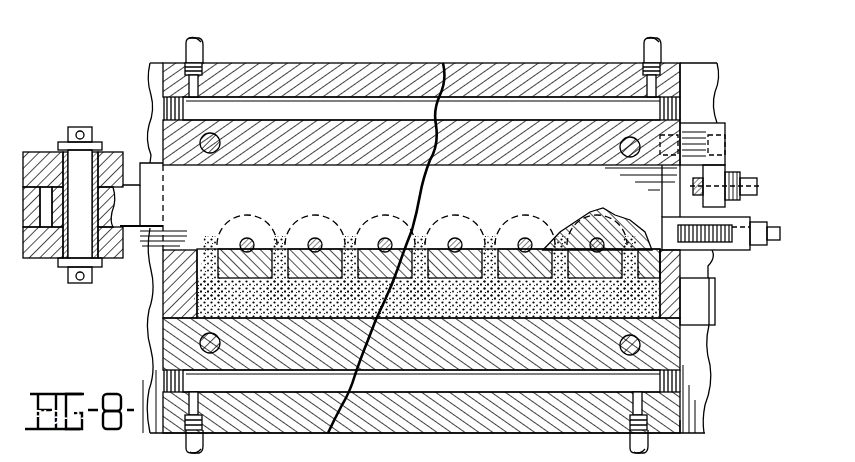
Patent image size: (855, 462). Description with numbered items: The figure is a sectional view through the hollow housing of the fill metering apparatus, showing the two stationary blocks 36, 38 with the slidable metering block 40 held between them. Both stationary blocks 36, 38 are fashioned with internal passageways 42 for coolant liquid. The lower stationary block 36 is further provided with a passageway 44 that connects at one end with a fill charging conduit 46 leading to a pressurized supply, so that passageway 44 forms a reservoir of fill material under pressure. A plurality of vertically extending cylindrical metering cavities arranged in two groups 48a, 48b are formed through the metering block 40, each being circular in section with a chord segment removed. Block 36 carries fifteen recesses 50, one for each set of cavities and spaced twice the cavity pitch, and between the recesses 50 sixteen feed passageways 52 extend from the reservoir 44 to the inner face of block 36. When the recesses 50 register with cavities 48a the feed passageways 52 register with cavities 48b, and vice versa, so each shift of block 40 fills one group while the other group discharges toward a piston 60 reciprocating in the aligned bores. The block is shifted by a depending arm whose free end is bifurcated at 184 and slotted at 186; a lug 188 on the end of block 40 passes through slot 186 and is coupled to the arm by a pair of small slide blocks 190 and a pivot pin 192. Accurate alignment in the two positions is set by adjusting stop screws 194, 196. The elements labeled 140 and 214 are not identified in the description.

The stationary block 36 is at (556, 429).
The stationary block 38 is at (617, 50).
The metering block 40 is at (657, 180).
The internal passageways 42 is at (553, 100).
The passageway 44 is at (514, 318).
The fill charging conduit 46 is at (705, 309).
The metering cavities 48a is at (208, 236).
The metering cavities 48b is at (255, 238).
The recesses 50 is at (307, 272).
The feed passageways 52 is at (221, 283).
The piston 60 is at (247, 238).
The lower clamp block 140 is at (54, 262).
The bifurcation 184 is at (117, 190).
The slot 186 is at (111, 155).
The lug 188 is at (133, 232).
The slide blocks 190 is at (62, 160).
The pivot pin 192 is at (70, 284).
The stop screw 194 is at (750, 178).
The stop screw 196 is at (767, 235).
The rod 214 is at (453, 220).